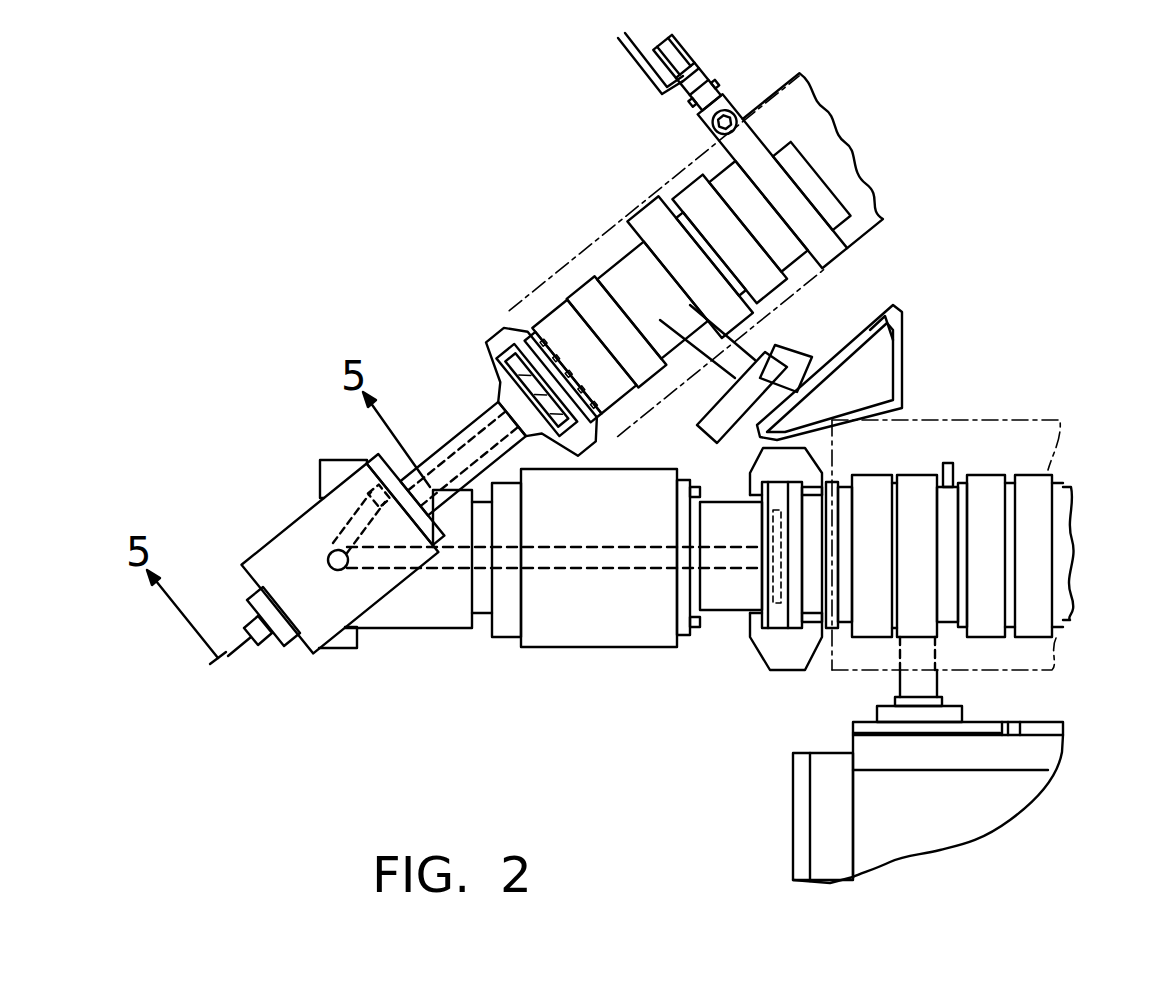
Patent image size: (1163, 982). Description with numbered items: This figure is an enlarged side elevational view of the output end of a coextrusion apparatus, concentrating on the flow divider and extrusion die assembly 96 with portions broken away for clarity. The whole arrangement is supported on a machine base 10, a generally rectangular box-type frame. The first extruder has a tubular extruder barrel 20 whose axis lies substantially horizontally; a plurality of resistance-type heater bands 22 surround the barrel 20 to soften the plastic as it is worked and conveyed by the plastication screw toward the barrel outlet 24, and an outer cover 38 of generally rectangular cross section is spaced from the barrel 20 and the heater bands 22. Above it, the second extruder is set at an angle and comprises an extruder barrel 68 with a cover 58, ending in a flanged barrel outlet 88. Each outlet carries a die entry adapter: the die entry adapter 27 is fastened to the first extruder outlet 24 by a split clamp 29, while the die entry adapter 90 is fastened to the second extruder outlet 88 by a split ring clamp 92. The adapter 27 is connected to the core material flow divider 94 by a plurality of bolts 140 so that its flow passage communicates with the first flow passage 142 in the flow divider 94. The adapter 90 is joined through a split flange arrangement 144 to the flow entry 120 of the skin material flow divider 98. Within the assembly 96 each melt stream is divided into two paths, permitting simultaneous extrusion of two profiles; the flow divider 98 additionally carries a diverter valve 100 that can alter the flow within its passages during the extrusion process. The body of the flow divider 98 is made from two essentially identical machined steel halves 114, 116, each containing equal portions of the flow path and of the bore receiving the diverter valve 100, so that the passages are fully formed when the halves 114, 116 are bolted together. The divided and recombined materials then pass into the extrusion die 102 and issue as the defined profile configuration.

The machine base 10 is at (980, 818).
The extruder barrel 20 is at (950, 626).
The heater bands 22 is at (1040, 598).
The barrel outlet 24 is at (754, 545).
The die entry adapter 27 is at (725, 600).
The split clamp 29 is at (795, 655).
The outer cover 38 is at (978, 420).
The cover 58 is at (820, 292).
The extruder barrel 68 is at (832, 124).
The barrel outlet 88 is at (520, 397).
The die entry adapter 90 is at (468, 428).
The split ring clamp 92 is at (510, 335).
The flow divider 94 is at (572, 632).
The flow divider and extrusion die assembly 96 is at (480, 678).
The flow divider 98 is at (300, 638).
The diverter valve 100 is at (246, 643).
The extrusion die 102 is at (415, 620).
The body half 114 is at (268, 548).
The body half 116 is at (378, 596).
The flow entry 120 is at (322, 479).
The bolts 140 is at (697, 488).
The first flow passage 142 is at (633, 550).
The split flange arrangement 144 is at (383, 472).